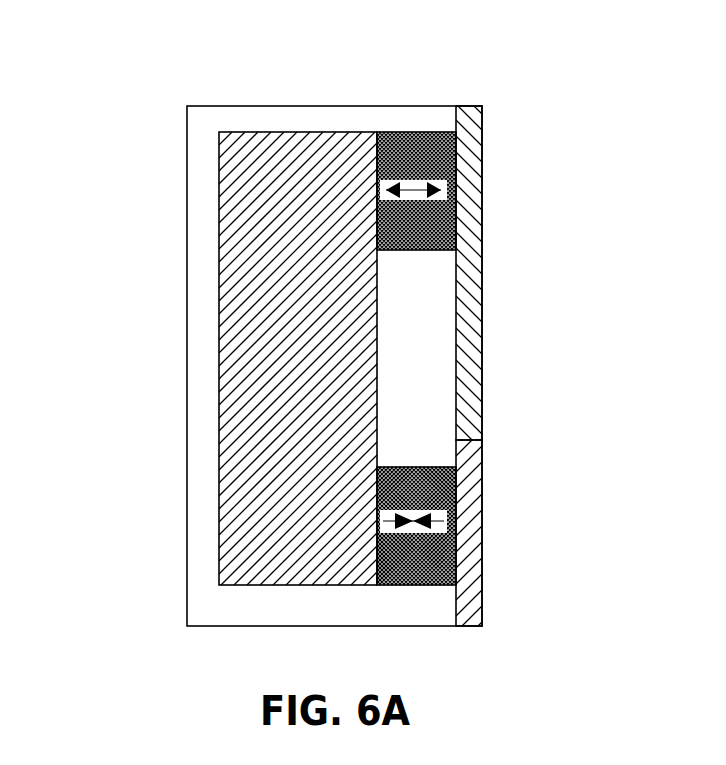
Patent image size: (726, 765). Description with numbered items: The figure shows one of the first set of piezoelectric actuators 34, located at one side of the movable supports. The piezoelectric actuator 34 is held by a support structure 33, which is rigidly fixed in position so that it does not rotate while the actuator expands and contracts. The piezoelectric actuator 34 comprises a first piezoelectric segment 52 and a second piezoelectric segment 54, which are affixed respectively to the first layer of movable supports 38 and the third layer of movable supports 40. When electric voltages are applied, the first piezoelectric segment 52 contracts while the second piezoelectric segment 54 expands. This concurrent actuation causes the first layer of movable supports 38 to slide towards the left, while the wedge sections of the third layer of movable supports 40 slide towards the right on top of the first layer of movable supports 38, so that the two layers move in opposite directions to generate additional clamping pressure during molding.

The piezoelectric actuator 34 is at (408, 92).
The support structure 33 is at (237, 243).
The second piezoelectric segment 54 is at (457, 235).
The first piezoelectric segment 52 is at (440, 551).
The third layer of movable supports 40 is at (465, 345).
The first layer of movable supports 38 is at (485, 476).